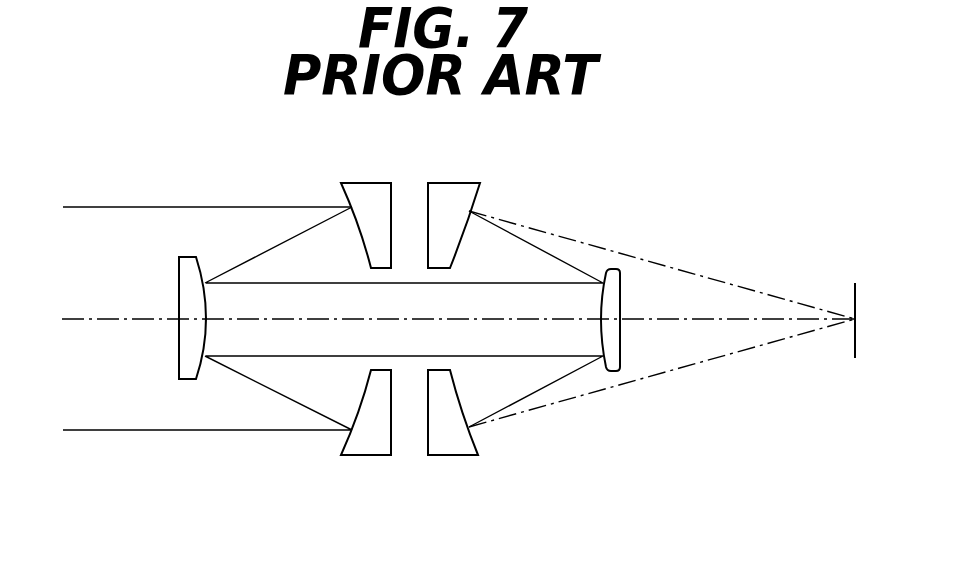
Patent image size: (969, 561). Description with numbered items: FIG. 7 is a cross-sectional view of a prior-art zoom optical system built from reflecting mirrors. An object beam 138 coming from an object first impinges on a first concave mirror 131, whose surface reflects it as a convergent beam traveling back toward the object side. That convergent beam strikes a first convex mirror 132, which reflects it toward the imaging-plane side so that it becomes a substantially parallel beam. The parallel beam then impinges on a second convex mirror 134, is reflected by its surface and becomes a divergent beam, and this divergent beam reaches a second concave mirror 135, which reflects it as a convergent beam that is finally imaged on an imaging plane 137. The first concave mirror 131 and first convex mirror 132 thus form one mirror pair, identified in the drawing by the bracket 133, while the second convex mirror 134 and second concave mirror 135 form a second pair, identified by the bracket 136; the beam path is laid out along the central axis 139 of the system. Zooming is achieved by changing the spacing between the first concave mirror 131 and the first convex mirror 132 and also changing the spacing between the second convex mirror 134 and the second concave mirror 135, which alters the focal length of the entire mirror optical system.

The first concave mirror 131 is at (361, 183).
The first convex mirror 132 is at (177, 263).
The first beam shaping lens group 133 is at (393, 478).
The second convex mirror 134 is at (622, 307).
The second concave mirror 135 is at (452, 183).
The second beam shaping lens group 136 is at (622, 478).
The imaging plane 137 is at (858, 302).
The object beam 138 is at (88, 206).
The optical axis 139 is at (80, 318).